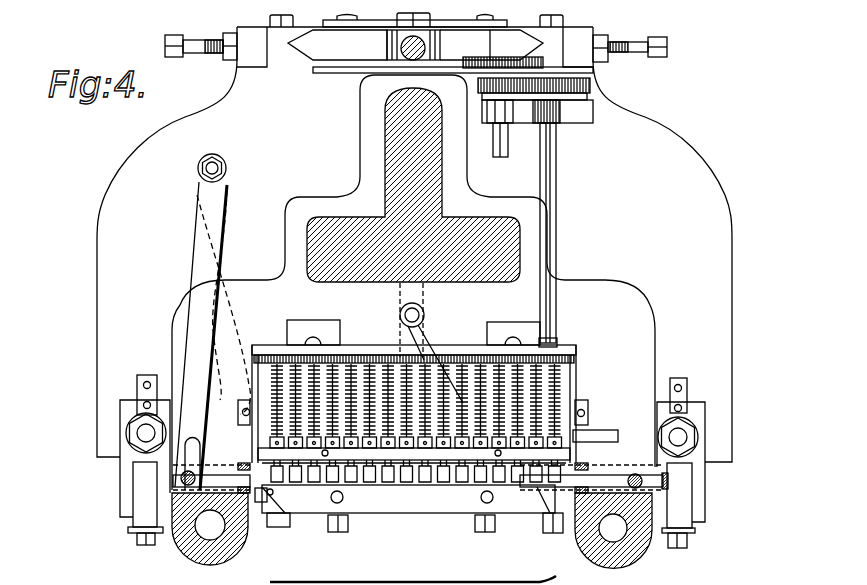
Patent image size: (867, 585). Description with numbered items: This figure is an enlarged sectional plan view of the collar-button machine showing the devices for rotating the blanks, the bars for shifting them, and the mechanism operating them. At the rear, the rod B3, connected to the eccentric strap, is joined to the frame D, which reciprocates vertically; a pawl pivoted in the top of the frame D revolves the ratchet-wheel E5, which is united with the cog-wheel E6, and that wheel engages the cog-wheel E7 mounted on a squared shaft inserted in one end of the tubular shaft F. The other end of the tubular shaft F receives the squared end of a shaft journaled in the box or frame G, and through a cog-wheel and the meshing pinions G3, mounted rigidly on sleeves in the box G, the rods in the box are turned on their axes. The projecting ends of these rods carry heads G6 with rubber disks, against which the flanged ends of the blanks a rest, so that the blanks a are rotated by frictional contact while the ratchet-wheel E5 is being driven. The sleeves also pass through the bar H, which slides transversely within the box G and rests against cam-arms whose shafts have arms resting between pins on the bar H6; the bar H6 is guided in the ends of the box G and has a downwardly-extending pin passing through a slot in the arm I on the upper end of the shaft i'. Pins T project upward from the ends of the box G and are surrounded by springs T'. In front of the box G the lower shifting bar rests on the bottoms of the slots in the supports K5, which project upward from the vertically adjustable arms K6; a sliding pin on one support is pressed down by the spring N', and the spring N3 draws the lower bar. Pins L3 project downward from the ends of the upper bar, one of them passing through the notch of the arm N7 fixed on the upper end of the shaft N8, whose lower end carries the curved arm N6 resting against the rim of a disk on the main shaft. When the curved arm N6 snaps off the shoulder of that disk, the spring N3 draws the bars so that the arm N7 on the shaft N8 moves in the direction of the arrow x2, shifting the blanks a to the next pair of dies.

The frame D is at (337, 45).
The rod B3 is at (427, 45).
The ratchet-wheel E5 is at (491, 49).
The cog-wheel E6 is at (522, 89).
The cog-wheel E7 is at (537, 128).
The tubular shaft F is at (558, 162).
The shaft N8 is at (228, 168).
The arm N7 is at (193, 268).
The pins L3 is at (197, 478).
The arrow x2 is at (149, 341).
The curved arm N6 is at (236, 317).
The shaft i' is at (400, 320).
The arm I is at (434, 341).
The box or frame G is at (578, 368).
The pinion G3 is at (284, 353).
The bar H is at (414, 456).
The head or cap G6 is at (408, 476).
The blanks a is at (305, 500).
The spring N' is at (265, 498).
The springs T' is at (234, 412).
The pins T is at (592, 412).
The bar H6 is at (604, 426).
The supports K5 is at (590, 463).
The arms K6 is at (681, 475).
The spring N3 is at (668, 476).